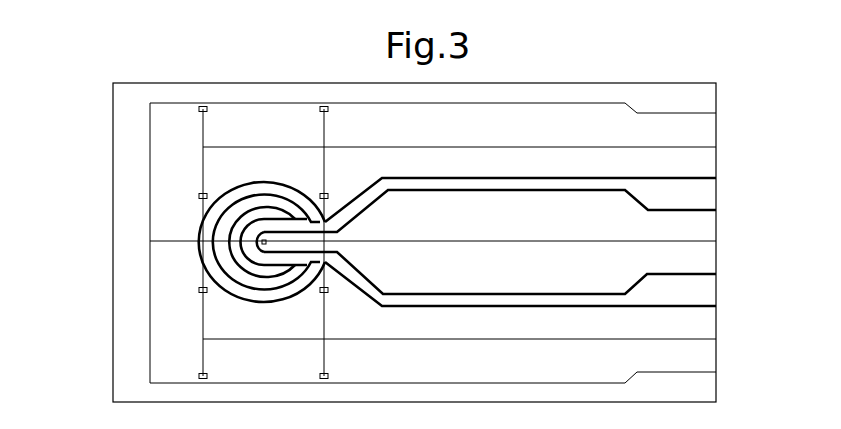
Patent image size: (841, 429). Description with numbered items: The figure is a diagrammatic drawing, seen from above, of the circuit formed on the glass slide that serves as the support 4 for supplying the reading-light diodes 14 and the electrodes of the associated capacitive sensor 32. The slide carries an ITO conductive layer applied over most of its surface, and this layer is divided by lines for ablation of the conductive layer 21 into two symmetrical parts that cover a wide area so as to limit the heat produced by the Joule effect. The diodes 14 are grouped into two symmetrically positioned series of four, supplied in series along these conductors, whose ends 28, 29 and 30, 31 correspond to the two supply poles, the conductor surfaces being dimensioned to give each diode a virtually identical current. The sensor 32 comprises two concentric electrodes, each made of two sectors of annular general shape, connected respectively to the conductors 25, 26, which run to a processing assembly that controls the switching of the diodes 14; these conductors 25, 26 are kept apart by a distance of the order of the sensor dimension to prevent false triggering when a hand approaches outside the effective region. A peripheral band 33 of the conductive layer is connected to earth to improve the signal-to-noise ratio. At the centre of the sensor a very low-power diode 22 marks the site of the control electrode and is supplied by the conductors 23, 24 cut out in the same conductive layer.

The support 4 is at (687, 77).
The diodes 14 is at (322, 107).
The lines for ablation of the conductive layer 21 is at (383, 337).
The diode 22 is at (262, 240).
The conductor 23 is at (700, 233).
The conductor 24 is at (700, 261).
The conductor 25 is at (700, 195).
The conductor 26 is at (700, 292).
The conductor end 28 is at (694, 135).
The conductor end 29 is at (700, 165).
The conductor end 30 is at (700, 323).
The conductor end 31 is at (700, 360).
The sensor 32 is at (193, 213).
The peripheral band 33 is at (513, 87).